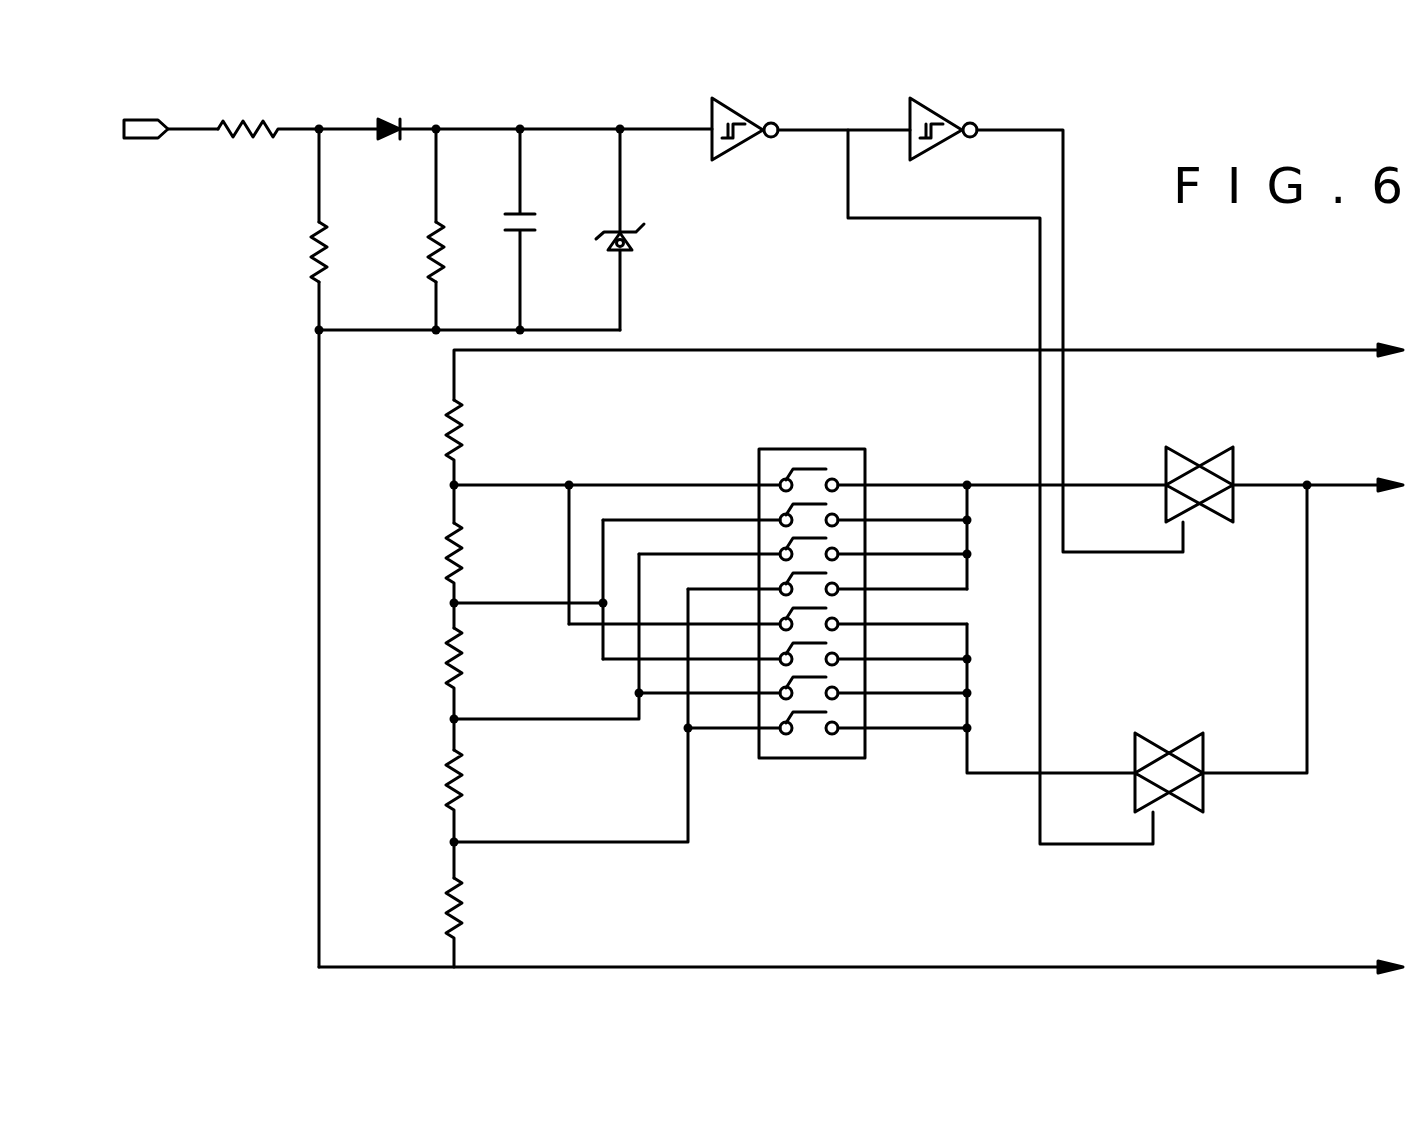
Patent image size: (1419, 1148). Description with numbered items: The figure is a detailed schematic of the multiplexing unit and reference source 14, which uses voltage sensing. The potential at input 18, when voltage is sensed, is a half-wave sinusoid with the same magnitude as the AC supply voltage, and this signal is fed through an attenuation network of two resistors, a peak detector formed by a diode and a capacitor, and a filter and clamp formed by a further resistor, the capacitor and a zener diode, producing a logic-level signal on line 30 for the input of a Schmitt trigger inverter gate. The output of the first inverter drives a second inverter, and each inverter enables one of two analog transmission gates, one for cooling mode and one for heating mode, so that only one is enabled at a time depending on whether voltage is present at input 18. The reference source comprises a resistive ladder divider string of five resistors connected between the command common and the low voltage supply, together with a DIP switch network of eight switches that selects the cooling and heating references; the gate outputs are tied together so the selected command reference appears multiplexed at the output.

The multiplexing unit and reference source 14 is at (285, 788).
The voltage sensing input 18 is at (164, 174).
The line 30 is at (558, 129).